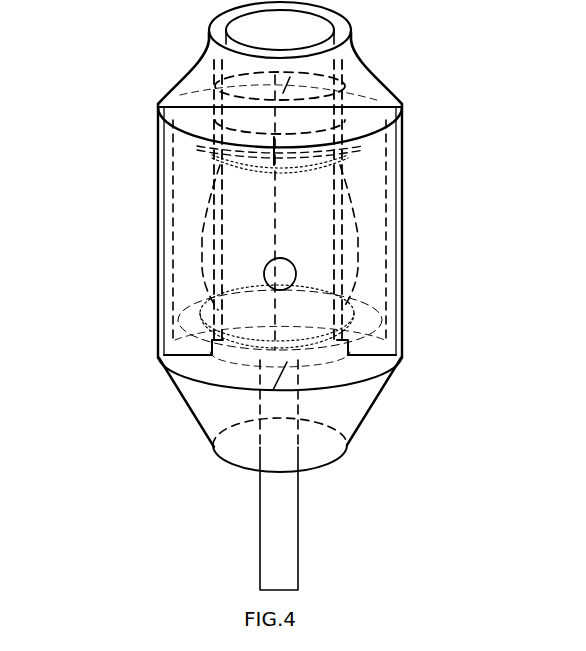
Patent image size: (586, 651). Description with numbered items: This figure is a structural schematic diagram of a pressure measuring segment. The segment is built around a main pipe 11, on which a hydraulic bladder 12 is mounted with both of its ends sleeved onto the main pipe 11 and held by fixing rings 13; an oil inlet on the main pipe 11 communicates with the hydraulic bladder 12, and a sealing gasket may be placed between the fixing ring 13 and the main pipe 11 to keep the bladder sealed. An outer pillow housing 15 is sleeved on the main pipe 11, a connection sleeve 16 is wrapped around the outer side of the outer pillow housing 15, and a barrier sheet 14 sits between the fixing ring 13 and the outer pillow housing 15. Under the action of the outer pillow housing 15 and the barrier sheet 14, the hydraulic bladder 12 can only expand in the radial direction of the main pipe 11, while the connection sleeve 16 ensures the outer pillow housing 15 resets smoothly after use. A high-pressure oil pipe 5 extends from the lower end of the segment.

The high-pressure oil pipe 5 is at (258, 543).
The main pipe 11 is at (340, 243).
The hydraulic bladder 12 is at (198, 263).
The fixing ring 13 is at (207, 327).
The barrier sheet 14 is at (370, 322).
The outer pillow housing 15 is at (167, 175).
The connection sleeve 16 is at (190, 67).